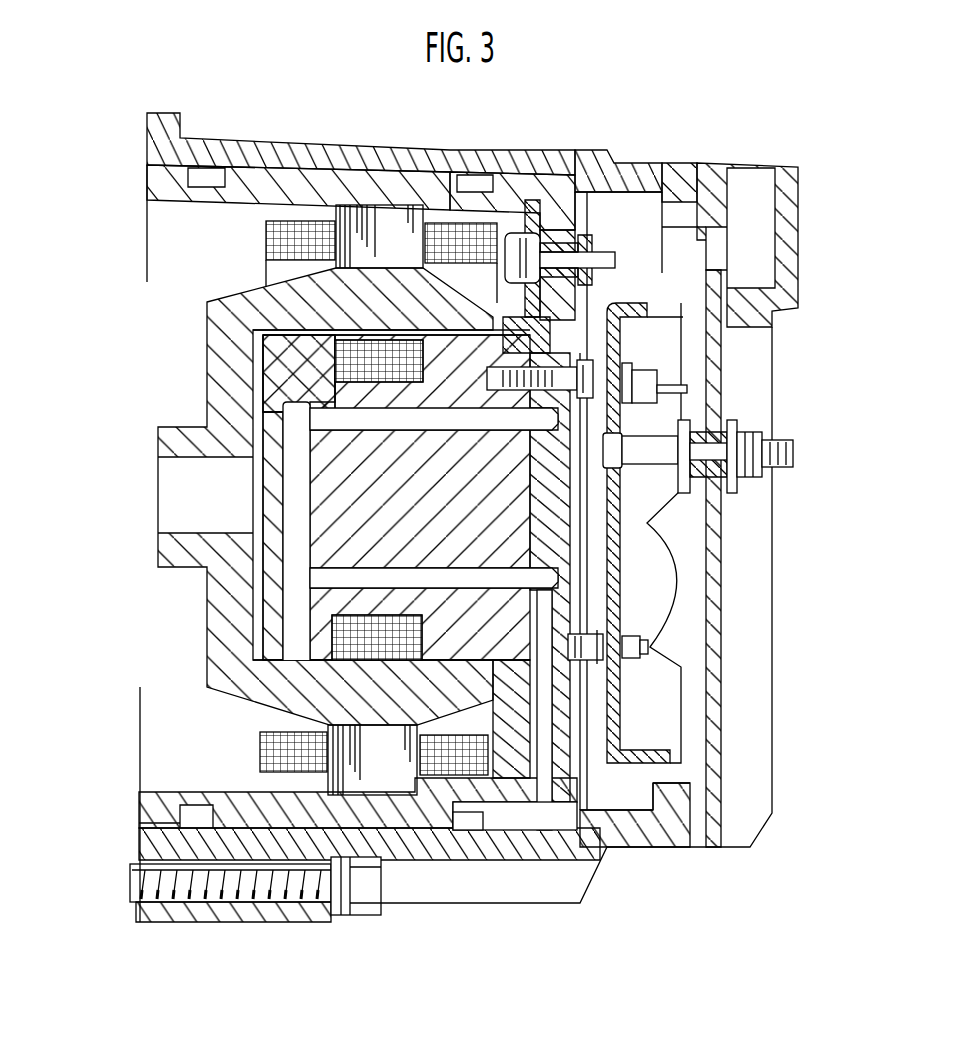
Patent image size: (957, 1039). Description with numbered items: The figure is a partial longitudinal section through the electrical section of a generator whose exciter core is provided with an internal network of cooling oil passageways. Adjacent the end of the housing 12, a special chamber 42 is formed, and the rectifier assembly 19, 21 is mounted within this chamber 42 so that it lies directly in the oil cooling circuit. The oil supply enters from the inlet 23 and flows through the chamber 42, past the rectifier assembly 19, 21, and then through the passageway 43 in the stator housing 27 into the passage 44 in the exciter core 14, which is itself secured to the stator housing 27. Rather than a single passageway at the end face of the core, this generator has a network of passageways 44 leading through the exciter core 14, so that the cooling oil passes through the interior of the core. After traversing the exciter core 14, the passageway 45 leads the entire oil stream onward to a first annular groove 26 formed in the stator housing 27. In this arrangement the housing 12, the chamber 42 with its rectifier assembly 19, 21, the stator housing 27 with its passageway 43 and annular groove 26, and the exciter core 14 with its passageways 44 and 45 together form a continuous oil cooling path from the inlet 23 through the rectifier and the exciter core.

The housing 12 is at (432, 158).
The stator housing 27 is at (523, 193).
The chamber 42 is at (632, 222).
The inlet 23 is at (757, 197).
The exciter core 14 is at (287, 370).
The passageway in the exciter core 44 is at (300, 487).
The passageway in the stator housing 43 is at (548, 425).
The rectifier assembly 21 is at (660, 338).
The rectifier assembly 19 is at (647, 383).
The first annular groove 26 is at (468, 818).
The passageway 45 is at (518, 812).